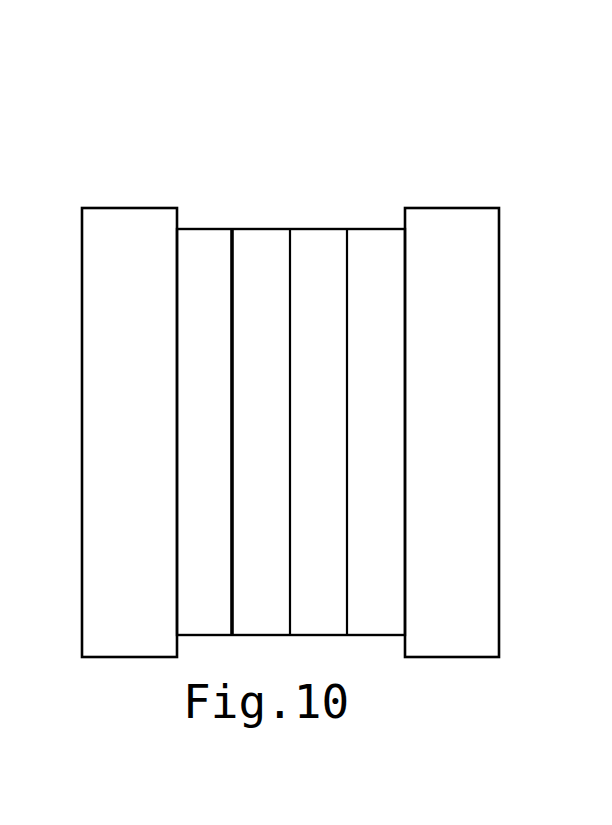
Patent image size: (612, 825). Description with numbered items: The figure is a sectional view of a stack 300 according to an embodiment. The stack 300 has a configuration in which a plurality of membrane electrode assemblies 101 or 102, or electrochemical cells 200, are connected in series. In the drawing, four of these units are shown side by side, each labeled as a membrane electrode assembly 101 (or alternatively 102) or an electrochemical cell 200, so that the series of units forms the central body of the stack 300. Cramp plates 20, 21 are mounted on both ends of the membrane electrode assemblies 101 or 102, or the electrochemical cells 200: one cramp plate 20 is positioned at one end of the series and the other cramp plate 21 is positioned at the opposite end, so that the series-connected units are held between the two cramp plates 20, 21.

The stack 300 is at (85, 102).
The cramp plate 20 is at (117, 237).
The cramp plate 21 is at (443, 237).
The membrane electrode assembly 101 is at (291, 432).
The membrane electrode assembly 102 is at (291, 432).
The electrochemical cell 200 is at (291, 432).